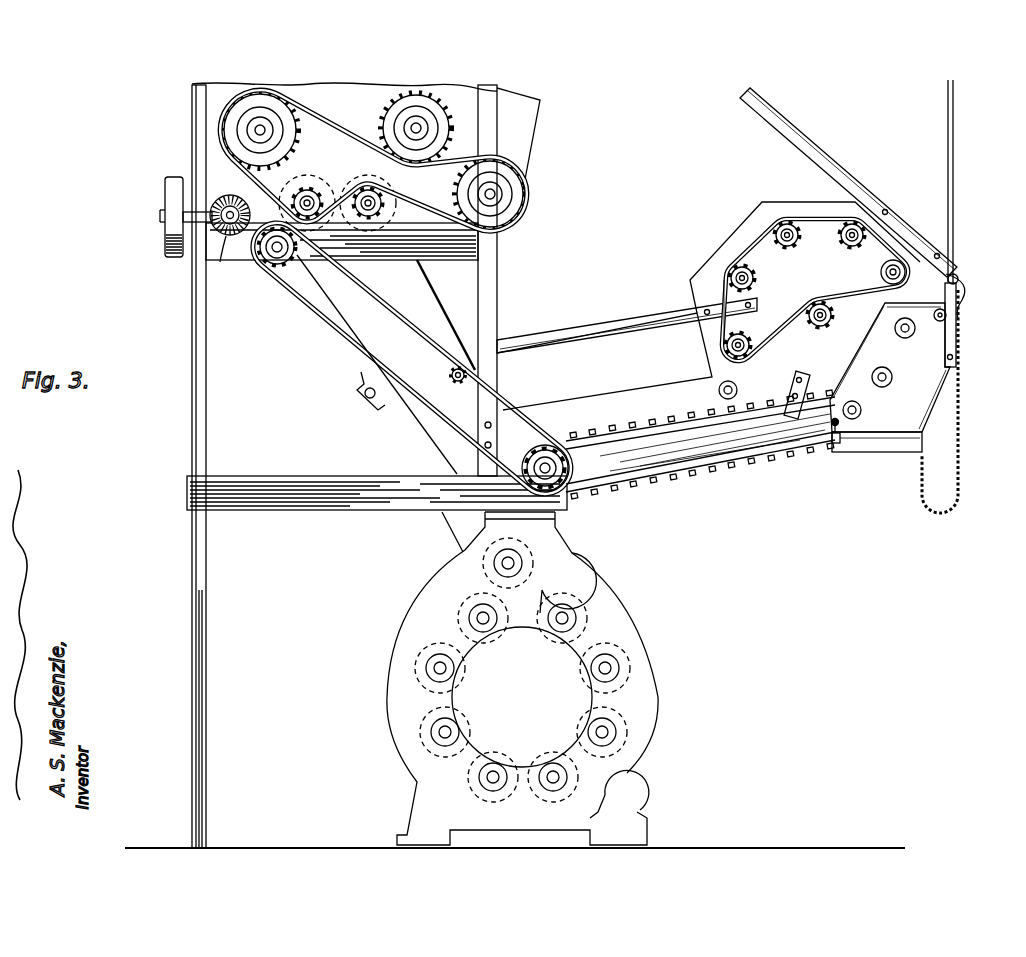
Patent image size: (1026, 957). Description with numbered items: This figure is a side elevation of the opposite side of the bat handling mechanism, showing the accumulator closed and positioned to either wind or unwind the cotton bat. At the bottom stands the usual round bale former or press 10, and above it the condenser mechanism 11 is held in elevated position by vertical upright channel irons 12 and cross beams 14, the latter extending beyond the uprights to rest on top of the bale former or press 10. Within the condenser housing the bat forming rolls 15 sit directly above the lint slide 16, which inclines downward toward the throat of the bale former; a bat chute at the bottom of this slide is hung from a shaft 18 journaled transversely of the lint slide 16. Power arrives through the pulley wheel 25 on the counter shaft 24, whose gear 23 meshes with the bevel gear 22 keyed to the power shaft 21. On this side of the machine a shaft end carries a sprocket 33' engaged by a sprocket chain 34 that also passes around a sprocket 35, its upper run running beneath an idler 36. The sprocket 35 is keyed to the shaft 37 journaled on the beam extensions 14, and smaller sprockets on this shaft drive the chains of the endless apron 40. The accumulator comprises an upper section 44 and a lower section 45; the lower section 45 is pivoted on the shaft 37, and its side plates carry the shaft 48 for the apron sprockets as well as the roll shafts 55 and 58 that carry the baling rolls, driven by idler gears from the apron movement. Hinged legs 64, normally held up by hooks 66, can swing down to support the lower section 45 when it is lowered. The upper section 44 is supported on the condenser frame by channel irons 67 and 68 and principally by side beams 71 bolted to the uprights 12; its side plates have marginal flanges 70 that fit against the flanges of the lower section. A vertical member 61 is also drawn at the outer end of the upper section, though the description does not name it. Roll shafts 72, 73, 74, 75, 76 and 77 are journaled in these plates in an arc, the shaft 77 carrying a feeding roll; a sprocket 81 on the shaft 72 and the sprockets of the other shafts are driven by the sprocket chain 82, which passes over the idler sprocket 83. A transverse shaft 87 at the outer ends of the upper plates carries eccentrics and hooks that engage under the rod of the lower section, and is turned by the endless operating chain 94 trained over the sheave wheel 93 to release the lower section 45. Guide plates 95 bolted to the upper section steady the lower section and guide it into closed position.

The bale former or press 10 is at (637, 703).
The condenser mechanism 11 is at (508, 138).
The vertical upright channel irons 12 is at (543, 271).
The cross beam 14 is at (315, 492).
The condenser or bat forming rolls 15 is at (308, 178).
The lint slide or chute 16 is at (413, 448).
The shaft 18 is at (368, 399).
The power shaft 21 is at (243, 215).
The bevel gear 22 is at (233, 203).
The gear 23 is at (220, 262).
The counter shaft 24 is at (166, 217).
The pulley wheel 25 is at (172, 177).
The sprocket 33' is at (266, 268).
The sprocket chain 34 is at (317, 308).
The sprocket 35 is at (562, 487).
The idler 36 is at (455, 368).
The shaft 37 is at (548, 456).
The endless apron 40 is at (746, 449).
The upper section of the accumulator 44 is at (735, 243).
The lower section of the accumulator 45 is at (905, 407).
The shaft 48 is at (948, 314).
The roll shaft 55 is at (893, 379).
The shaft 58 is at (909, 337).
The rod 61 is at (954, 158).
The feet or legs 64 is at (900, 442).
The hooks 66 is at (832, 436).
The channel iron 67 is at (627, 322).
The channel iron 68 is at (805, 137).
The marginal flanges 70 is at (868, 338).
The side beams 71 is at (622, 396).
The roll shaft 72 is at (905, 281).
The roll shaft 73 is at (862, 222).
The roll shaft 74 is at (788, 222).
The roll shaft 75 is at (756, 279).
The roll shaft 76 is at (721, 348).
The shaft 77 is at (737, 389).
The sprocket 81 is at (880, 272).
The sprocket chain 82 is at (757, 347).
The idler sprocket 83 is at (823, 328).
The transverse shaft 87 is at (959, 273).
The sheave wheel 93 is at (960, 280).
The endless operating chain or cable 94 is at (936, 510).
The guide plates 95 is at (806, 385).